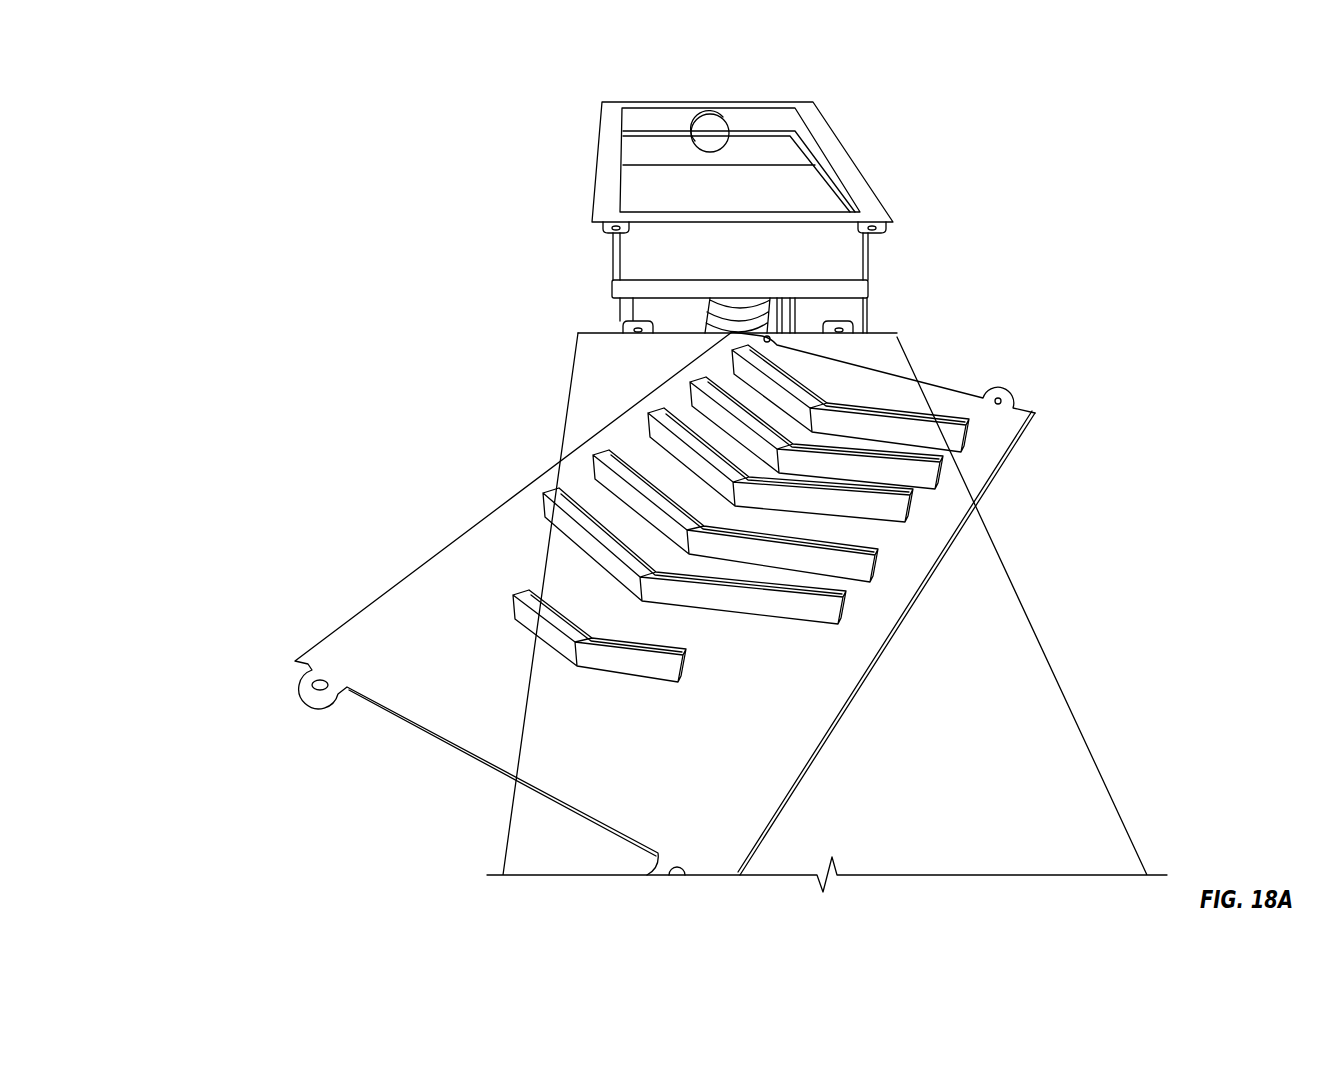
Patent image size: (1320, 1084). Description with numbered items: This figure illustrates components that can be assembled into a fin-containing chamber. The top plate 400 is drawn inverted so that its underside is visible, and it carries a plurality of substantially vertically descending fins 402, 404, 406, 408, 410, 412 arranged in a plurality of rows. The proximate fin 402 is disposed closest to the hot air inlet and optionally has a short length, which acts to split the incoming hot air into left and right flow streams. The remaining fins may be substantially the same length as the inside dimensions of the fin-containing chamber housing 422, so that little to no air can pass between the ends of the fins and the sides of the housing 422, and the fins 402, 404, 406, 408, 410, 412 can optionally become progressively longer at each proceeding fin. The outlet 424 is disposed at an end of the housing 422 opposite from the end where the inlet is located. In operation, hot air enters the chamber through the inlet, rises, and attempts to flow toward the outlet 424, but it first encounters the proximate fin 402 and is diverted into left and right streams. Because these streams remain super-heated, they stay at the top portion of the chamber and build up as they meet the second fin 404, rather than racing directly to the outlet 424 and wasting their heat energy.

The top plate 400 is at (1003, 452).
The proximate fin 402 is at (653, 668).
The second fin 404 is at (837, 628).
The fin 406 is at (850, 563).
The fin 408 is at (888, 510).
The fin 410 is at (918, 477).
The fin 412 is at (843, 418).
The fin-containing chamber housing 422 is at (842, 158).
The outlet 424 is at (709, 152).